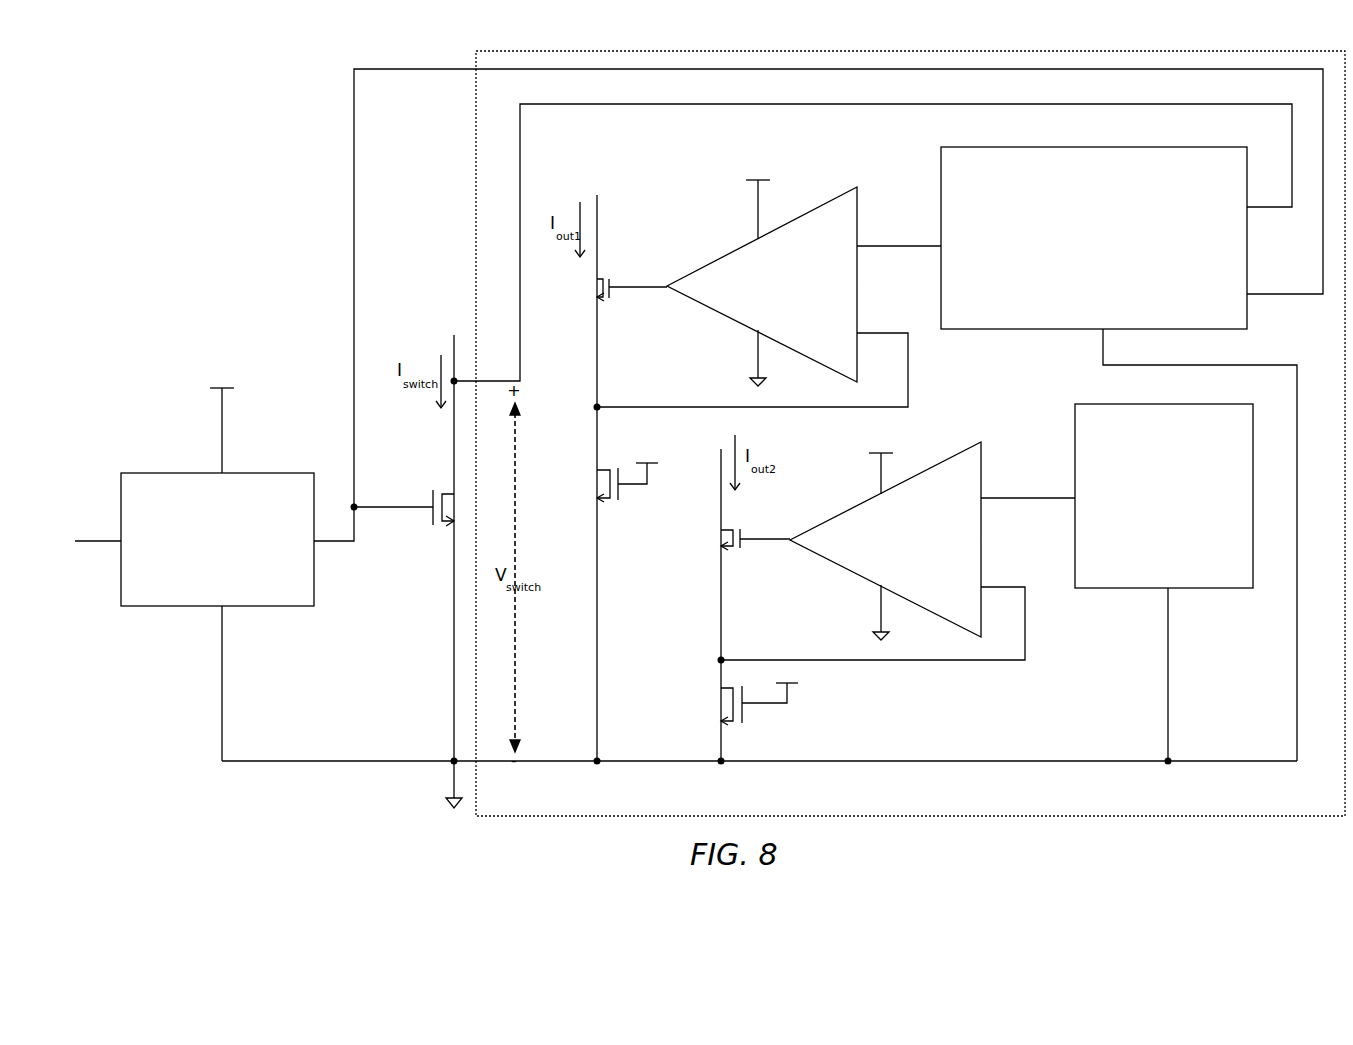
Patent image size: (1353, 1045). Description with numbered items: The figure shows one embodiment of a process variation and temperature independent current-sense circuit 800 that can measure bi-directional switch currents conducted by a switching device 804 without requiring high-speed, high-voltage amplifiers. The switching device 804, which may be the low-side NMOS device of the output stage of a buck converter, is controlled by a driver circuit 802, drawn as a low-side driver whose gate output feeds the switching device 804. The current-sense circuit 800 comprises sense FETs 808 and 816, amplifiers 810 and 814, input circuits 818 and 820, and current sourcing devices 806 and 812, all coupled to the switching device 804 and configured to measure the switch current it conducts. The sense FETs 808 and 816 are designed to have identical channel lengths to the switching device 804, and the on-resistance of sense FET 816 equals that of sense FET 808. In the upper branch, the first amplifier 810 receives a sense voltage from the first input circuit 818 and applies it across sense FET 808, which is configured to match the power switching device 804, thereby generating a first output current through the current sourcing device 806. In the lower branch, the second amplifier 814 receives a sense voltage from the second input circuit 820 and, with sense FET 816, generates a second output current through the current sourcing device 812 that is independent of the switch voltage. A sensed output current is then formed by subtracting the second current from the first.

The current-sense circuit 800 is at (1305, 812).
The driver circuit 802 is at (182, 473).
The switching device 804 is at (441, 484).
The current sourcing device 806 is at (604, 280).
The sense FET 808 is at (615, 506).
The amplifier 810 is at (741, 244).
The current sourcing device 812 is at (732, 531).
The amplifier 814 is at (844, 571).
The sense FET 816 is at (728, 696).
The input circuit 818 is at (1006, 145).
The input circuit 820 is at (1109, 403).